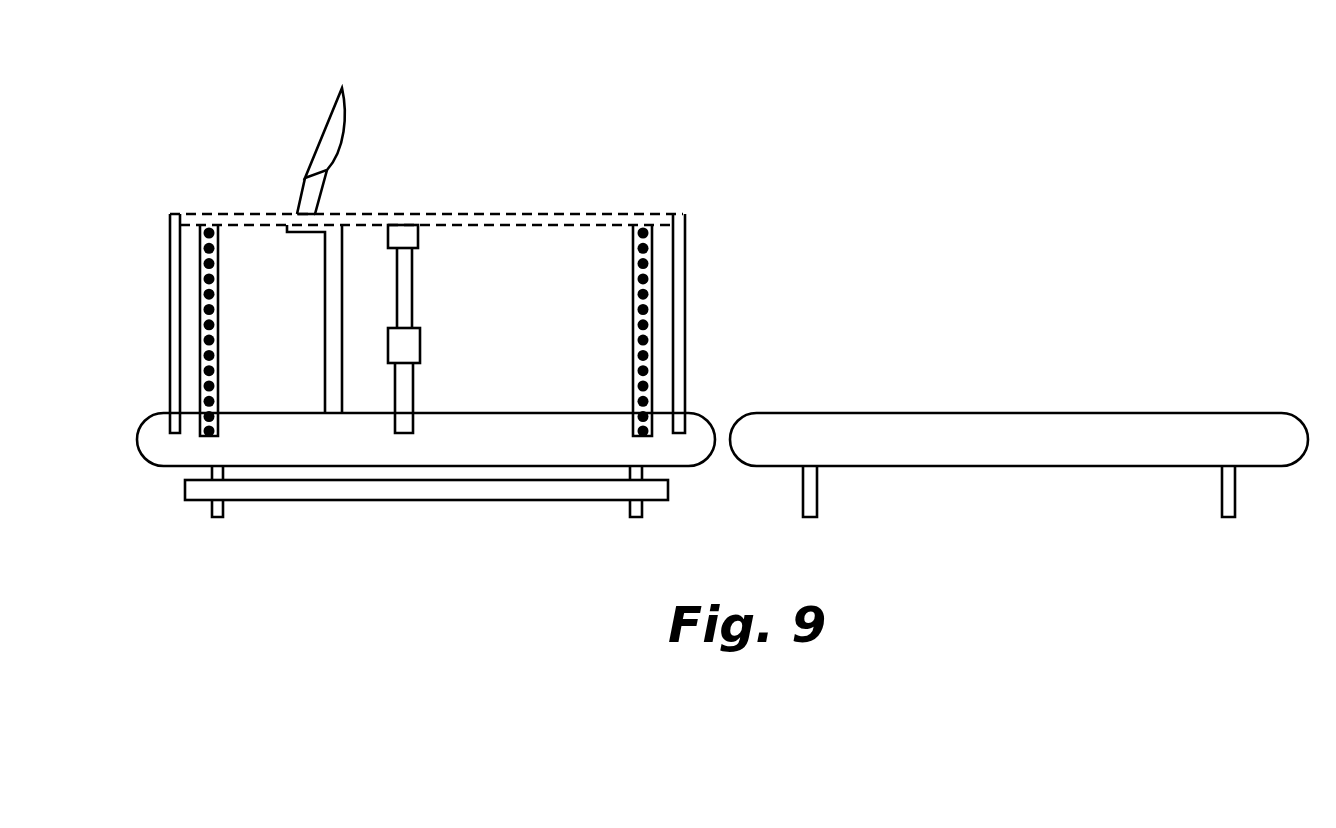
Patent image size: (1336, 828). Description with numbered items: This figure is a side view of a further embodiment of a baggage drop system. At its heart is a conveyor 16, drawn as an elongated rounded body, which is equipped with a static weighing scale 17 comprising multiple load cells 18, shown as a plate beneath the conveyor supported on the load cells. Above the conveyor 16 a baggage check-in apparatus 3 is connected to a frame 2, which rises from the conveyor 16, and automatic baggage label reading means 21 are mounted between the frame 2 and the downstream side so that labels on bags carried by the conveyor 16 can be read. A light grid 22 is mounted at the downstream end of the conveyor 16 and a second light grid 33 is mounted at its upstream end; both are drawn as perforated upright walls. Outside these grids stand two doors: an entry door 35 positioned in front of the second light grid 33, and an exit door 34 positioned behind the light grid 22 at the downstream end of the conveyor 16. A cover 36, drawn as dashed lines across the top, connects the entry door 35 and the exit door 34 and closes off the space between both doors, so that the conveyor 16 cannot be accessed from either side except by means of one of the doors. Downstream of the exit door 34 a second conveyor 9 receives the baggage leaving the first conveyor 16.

The frame 2 is at (330, 352).
The baggage check-in apparatus 3 is at (323, 133).
The second conveyor 9 is at (1013, 440).
The conveyor 16 is at (515, 440).
The static weighing scale 17 is at (423, 500).
The load cells 18 is at (212, 470).
The automatic baggage label reading means 21 is at (418, 237).
The light grid 22 is at (633, 300).
The second light grid 33 is at (220, 300).
The exit door 34 is at (685, 300).
The entry door 35 is at (170, 300).
The cover 36 is at (516, 213).